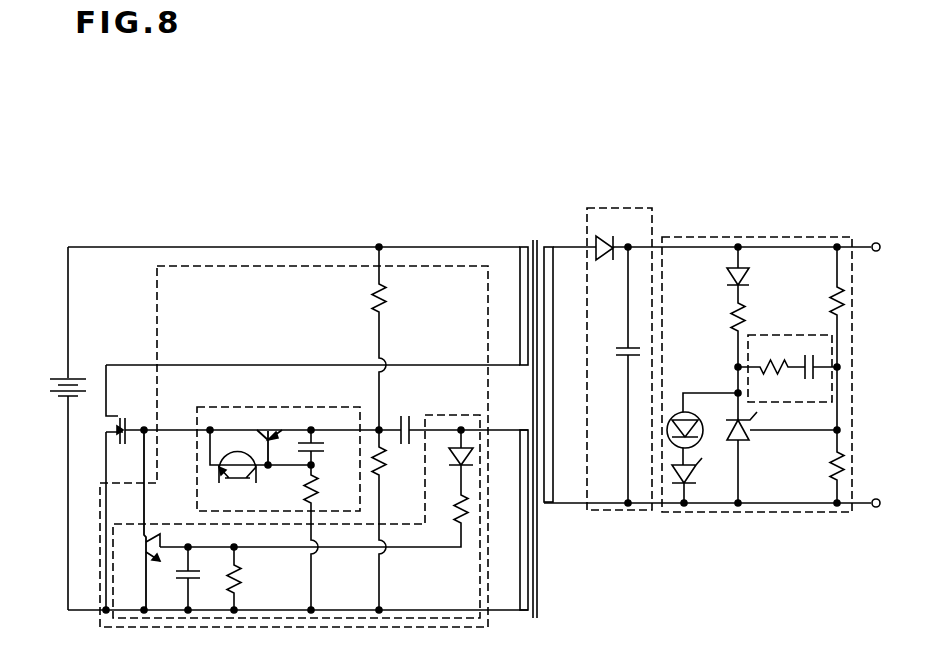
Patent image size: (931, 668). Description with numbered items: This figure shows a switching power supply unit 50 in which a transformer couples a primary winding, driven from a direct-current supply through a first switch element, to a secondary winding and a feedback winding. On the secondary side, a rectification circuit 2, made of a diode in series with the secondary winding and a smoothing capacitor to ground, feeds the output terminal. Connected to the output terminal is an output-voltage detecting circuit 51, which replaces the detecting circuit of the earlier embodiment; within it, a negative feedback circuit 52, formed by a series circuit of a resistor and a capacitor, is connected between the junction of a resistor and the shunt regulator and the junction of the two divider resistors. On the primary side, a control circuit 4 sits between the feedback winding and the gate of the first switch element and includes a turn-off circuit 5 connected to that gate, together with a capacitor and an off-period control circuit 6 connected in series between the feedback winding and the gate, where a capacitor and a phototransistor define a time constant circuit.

The switching power supply unit 50 is at (300, 194).
The control circuit 4 is at (224, 266).
The off-period control circuit 6 is at (231, 407).
The turn-off circuit 5 is at (457, 414).
The rectification circuit 2 is at (624, 208).
The output-voltage detecting circuit 51 is at (749, 237).
The negative feedback circuit 52 is at (788, 335).